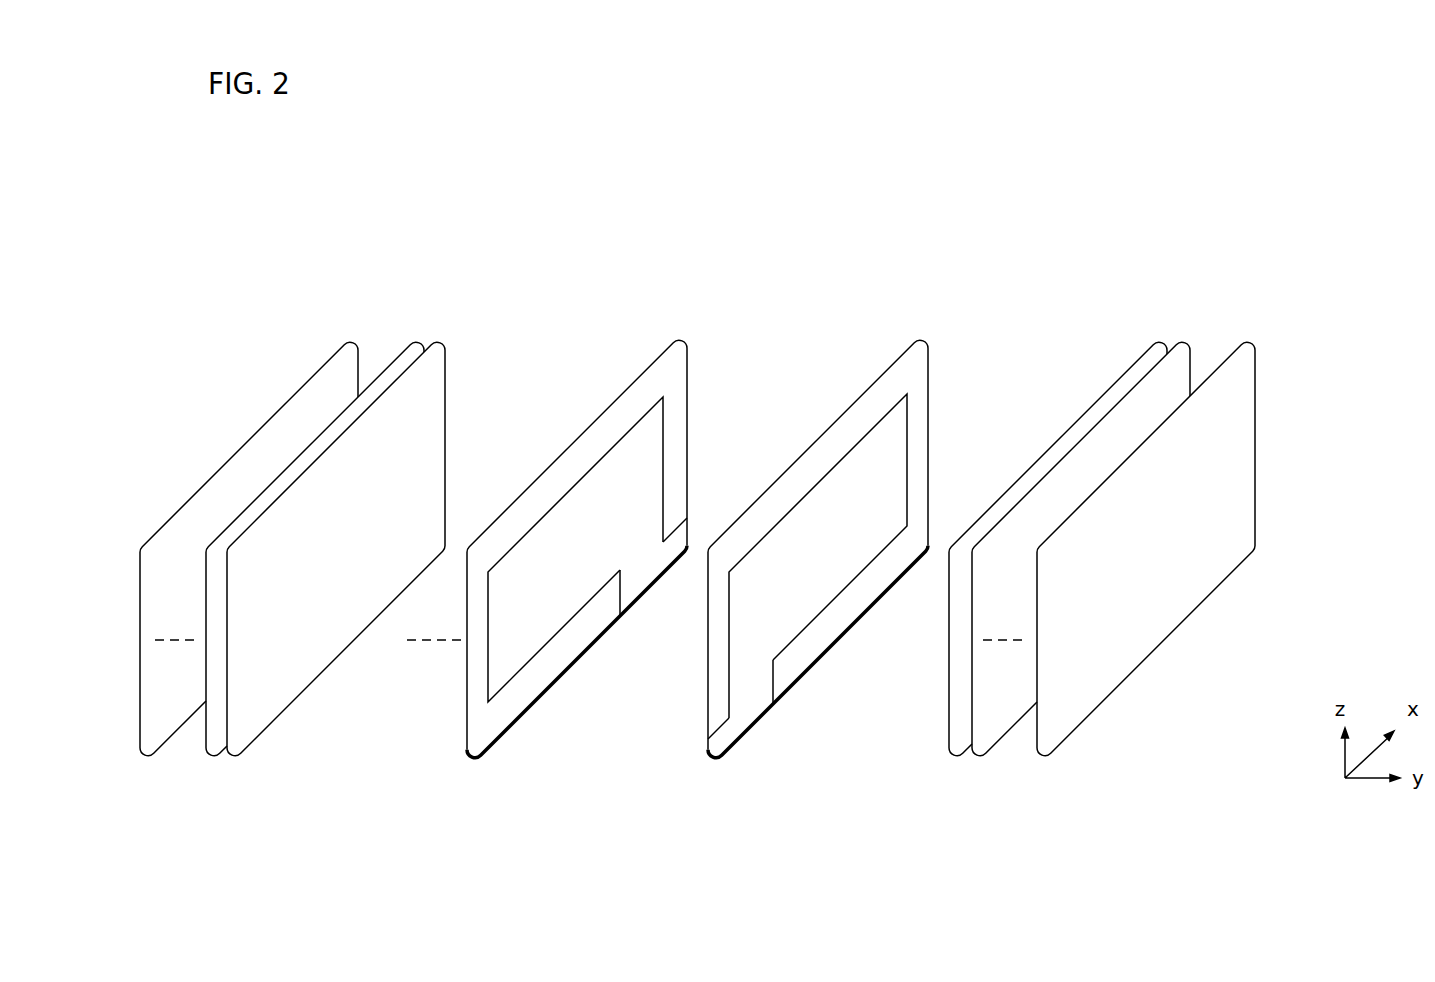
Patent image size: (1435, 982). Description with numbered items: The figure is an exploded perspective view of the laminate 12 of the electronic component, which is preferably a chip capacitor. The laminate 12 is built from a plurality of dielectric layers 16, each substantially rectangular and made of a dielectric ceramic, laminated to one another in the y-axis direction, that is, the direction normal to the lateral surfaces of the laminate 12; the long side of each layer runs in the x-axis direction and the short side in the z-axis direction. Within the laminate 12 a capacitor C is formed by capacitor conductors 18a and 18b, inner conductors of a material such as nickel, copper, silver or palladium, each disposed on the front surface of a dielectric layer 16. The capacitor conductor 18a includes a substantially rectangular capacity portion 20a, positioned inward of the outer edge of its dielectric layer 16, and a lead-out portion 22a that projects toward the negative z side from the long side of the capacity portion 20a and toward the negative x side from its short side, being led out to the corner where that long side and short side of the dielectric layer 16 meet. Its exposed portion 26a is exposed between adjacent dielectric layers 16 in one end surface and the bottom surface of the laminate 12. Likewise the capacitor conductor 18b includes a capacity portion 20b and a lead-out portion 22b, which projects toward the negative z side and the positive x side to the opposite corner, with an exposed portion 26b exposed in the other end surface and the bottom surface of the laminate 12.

The laminate 12 is at (308, 200).
The dielectric layer 16 is at (351, 341).
The capacitor conductor 18a is at (858, 572).
The capacitor conductor 18b is at (582, 548).
The capacity portion 20a is at (892, 453).
The capacity portion 20b is at (522, 565).
The lead-out portion 22a is at (747, 702).
The lead-out portion 22b is at (633, 583).
The exposed portion 26a is at (760, 717).
The exposed portion 26b is at (648, 585).
The capacitor C is at (745, 353).